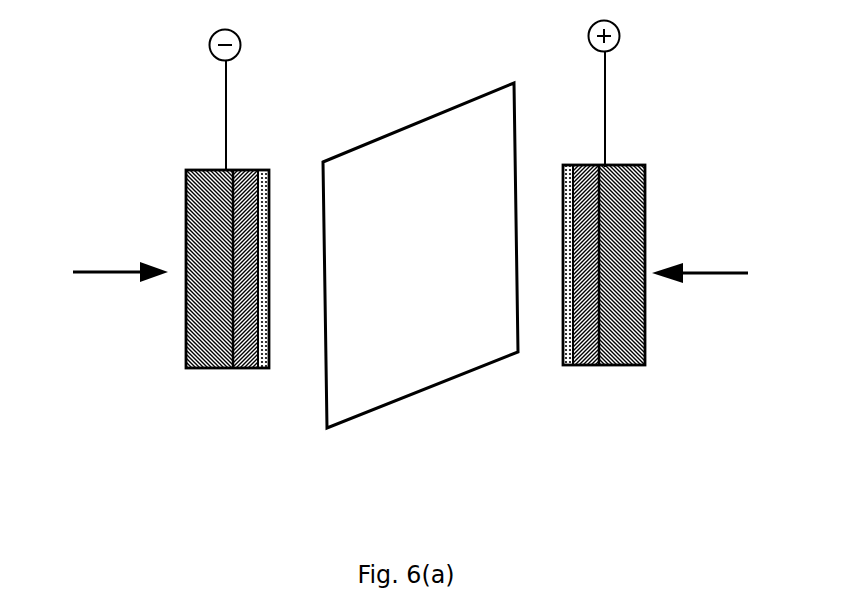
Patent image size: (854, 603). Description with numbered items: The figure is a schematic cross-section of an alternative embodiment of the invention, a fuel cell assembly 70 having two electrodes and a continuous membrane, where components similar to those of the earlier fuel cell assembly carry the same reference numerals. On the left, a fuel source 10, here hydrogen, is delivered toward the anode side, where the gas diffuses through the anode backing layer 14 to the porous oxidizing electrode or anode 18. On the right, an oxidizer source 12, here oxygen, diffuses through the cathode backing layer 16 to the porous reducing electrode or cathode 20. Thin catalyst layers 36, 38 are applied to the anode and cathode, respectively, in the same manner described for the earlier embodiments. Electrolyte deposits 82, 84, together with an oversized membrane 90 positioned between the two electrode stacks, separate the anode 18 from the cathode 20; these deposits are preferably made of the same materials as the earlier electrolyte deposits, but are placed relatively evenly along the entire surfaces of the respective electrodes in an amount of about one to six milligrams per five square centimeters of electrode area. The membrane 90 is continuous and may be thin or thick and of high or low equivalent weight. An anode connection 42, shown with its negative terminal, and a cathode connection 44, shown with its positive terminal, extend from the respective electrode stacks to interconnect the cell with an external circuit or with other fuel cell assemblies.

The fuel cell assembly 70 is at (93, 74).
The anode connection 42 is at (223, 86).
The cathode connection 44 is at (610, 82).
The electrolyte deposit 82 is at (219, 274).
The electrolyte deposit 84 is at (611, 270).
The anode backing layer 14 is at (198, 329).
The anode 18 is at (247, 369).
The thin catalyst layer 36 is at (263, 337).
The thin catalyst layer 38 is at (578, 331).
The cathode 20 is at (580, 350).
The cathode backing layer 16 is at (627, 327).
The oversized membrane 90 is at (355, 390).
The fuel source 10 is at (124, 271).
The oxidizer source 12 is at (701, 263).